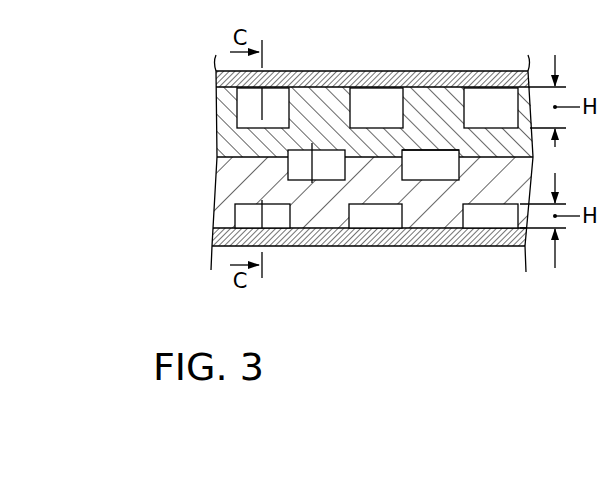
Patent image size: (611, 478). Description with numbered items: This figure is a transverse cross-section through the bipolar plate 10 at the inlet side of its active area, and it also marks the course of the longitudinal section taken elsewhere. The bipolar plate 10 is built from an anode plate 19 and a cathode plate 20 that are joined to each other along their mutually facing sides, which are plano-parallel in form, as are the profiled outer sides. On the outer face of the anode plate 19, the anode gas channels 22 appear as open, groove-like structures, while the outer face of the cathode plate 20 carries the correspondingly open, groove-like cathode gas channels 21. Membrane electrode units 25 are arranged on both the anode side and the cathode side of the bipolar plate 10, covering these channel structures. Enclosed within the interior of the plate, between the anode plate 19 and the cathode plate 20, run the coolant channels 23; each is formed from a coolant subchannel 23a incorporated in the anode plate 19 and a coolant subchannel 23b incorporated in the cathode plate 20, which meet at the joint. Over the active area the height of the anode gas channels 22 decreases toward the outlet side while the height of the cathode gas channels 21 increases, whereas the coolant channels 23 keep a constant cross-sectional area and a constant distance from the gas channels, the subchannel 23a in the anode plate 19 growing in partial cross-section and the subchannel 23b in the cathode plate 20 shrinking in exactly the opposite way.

The bipolar plate 10 is at (480, 257).
The anode plate 19 is at (225, 128).
The cathode plate 20 is at (232, 180).
The cathode gas channels 21 is at (388, 216).
The anode gas channels 22 is at (377, 105).
The coolant channels 23 is at (442, 167).
The coolant subchannel in the anode plate 23a is at (436, 150).
The coolant subchannel in the cathode plate 23b is at (325, 168).
The membrane electrode units 25 is at (494, 80).